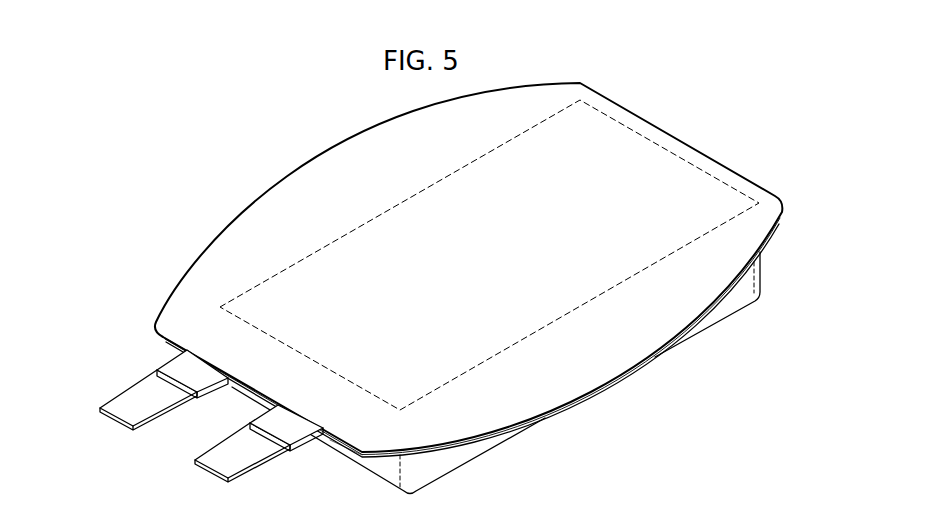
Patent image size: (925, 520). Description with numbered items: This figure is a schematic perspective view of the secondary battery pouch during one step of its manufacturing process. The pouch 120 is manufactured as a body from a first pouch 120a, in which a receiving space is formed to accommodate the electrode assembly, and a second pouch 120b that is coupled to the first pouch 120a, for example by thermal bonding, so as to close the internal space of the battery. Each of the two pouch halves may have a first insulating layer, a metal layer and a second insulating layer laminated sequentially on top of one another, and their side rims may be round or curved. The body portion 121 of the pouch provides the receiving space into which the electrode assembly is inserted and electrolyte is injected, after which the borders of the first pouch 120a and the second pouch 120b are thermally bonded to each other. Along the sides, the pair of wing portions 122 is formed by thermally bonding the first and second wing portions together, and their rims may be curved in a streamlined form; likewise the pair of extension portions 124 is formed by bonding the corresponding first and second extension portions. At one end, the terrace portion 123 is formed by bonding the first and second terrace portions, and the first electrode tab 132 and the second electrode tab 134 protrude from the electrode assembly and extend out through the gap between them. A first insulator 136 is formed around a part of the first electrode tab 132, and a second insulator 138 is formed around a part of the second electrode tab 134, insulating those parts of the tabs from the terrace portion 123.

The pouch 120 is at (600, 458).
The first pouch 120a is at (433, 468).
The second pouch 120b is at (459, 268).
The body portion 121 is at (650, 162).
The wing portions 122 is at (643, 350).
The terrace portion 123 is at (253, 368).
The extension portions 124 is at (385, 435).
The first electrode tab 132 is at (213, 465).
The second electrode tab 134 is at (120, 412).
The first insulator 136 is at (293, 453).
The second insulator 138 is at (187, 373).